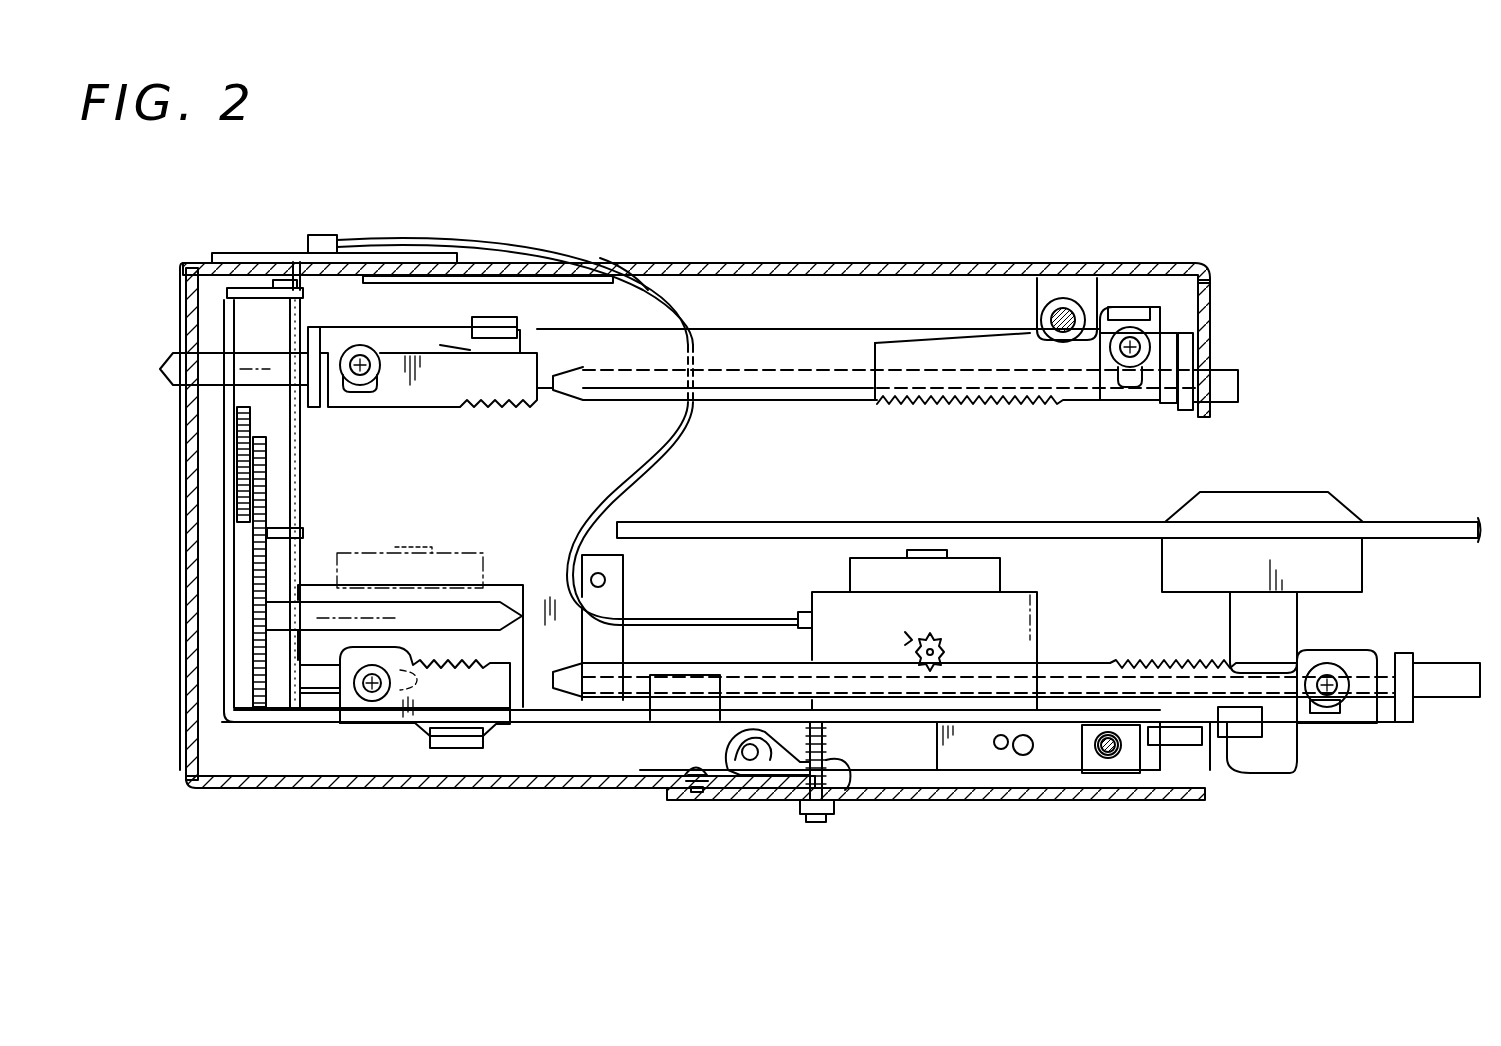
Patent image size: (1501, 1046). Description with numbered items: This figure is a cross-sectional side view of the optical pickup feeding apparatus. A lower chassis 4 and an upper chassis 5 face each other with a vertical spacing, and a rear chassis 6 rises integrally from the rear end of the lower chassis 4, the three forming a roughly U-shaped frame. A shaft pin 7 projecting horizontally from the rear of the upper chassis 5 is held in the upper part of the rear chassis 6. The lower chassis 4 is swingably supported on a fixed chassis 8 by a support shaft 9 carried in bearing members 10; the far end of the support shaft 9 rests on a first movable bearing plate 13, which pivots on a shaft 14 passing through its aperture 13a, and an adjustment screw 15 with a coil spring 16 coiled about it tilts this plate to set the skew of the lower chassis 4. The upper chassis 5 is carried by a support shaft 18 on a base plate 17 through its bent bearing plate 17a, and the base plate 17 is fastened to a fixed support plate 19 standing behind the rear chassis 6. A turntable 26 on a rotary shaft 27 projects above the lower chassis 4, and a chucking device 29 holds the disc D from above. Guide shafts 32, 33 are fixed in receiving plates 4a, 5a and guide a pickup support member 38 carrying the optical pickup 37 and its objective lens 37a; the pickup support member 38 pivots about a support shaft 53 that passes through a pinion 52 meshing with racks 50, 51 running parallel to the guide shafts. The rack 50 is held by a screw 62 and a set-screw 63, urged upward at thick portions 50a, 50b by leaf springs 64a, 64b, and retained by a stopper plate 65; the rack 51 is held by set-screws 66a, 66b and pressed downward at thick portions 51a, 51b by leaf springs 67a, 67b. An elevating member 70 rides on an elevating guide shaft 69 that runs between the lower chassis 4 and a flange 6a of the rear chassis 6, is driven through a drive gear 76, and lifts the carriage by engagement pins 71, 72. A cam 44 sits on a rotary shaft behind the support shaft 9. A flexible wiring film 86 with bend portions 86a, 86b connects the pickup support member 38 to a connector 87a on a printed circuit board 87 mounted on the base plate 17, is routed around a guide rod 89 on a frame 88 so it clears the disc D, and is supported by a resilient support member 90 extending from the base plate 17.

The lower chassis 4 is at (568, 724).
The receiving plate 4a is at (1405, 710).
The upper chassis 5 is at (797, 328).
The receiving plate 5a is at (1195, 358).
The rear chassis 6 is at (230, 548).
The flange 6a is at (262, 290).
The shaft pin 7 is at (207, 372).
The fixed chassis 8 is at (935, 801).
The support shaft 9 is at (1125, 752).
The bearing member 10 is at (1090, 748).
The first movable bearing plate 13 is at (975, 756).
The aperture 13a is at (1005, 750).
The shaft 14 is at (1035, 752).
The adjustment screw 15 is at (814, 814).
The coil spring 16 is at (835, 772).
The base plate 17 is at (908, 264).
The bearing plate 17a is at (1075, 286).
The support shaft 18 is at (1058, 300).
The fixed support plate 19 is at (182, 310).
The turntable 26 is at (1362, 570).
The rotary shaft 27 is at (1297, 622).
The chucking device 29 is at (1283, 492).
The guide shaft 32 is at (608, 684).
The guide shaft 33 is at (803, 402).
The optical pickup 37 is at (1000, 573).
The objective lens 37a is at (937, 550).
The pickup support member 38 is at (1037, 640).
The cam 44 is at (752, 772).
The rack 50 is at (1113, 662).
The thick portion 50a is at (492, 726).
The thick portion 50b is at (1265, 765).
The rack 51 is at (485, 401).
The thick portion 51a is at (470, 349).
The thick portion 51b is at (1153, 323).
The pinion 52 is at (945, 648).
The support shaft 53 is at (908, 640).
The screw 62 is at (1340, 692).
The set-screw 63 is at (373, 702).
The leaf spring 64a is at (450, 749).
The leaf spring 64b is at (1185, 746).
The stopper plate 65 is at (1237, 707).
The set-screw 66a is at (360, 356).
The set-screw 66b is at (1151, 347).
The leaf spring 67a is at (515, 322).
The leaf spring 67b is at (1133, 307).
The elevating guide shaft 69 is at (288, 463).
The elevating member 70 is at (258, 596).
The upper engagement pin 71 is at (490, 600).
The lower engagement pin 72 is at (318, 682).
The drive gear 76 is at (240, 457).
The flexible wiring film 86 is at (675, 443).
The bend portion 86a is at (683, 300).
The bend portion 86b is at (777, 612).
The printed circuit board 87 is at (296, 262).
The connector 87a is at (322, 234).
The frame 88 is at (622, 642).
The guide rod 89 is at (606, 580).
The resilient support member 90 is at (517, 276).
The disc D is at (1423, 522).